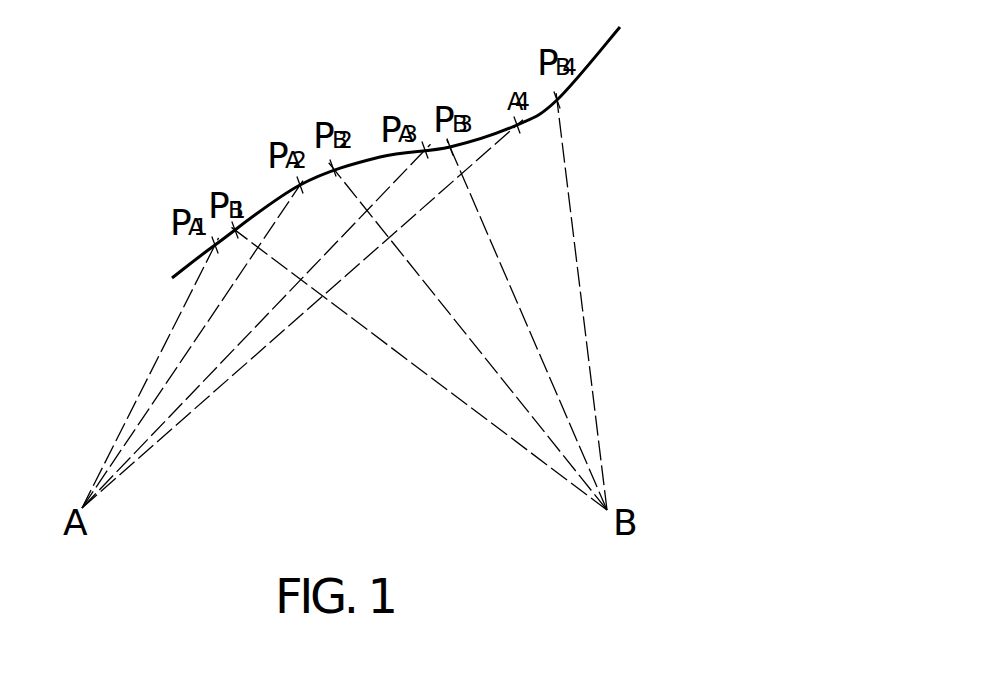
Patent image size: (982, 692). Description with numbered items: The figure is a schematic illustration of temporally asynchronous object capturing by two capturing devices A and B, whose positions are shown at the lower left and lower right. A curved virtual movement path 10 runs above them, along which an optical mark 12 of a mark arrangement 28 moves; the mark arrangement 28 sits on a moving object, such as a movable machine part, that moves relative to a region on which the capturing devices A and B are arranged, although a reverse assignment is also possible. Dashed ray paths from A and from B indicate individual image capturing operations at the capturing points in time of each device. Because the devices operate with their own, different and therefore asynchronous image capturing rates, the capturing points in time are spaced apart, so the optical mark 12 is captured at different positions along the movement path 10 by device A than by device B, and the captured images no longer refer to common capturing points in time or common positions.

The movement path 10 is at (622, 30).
The optical mark 12 is at (113, 114).
The mark arrangement 28 is at (148, 146).